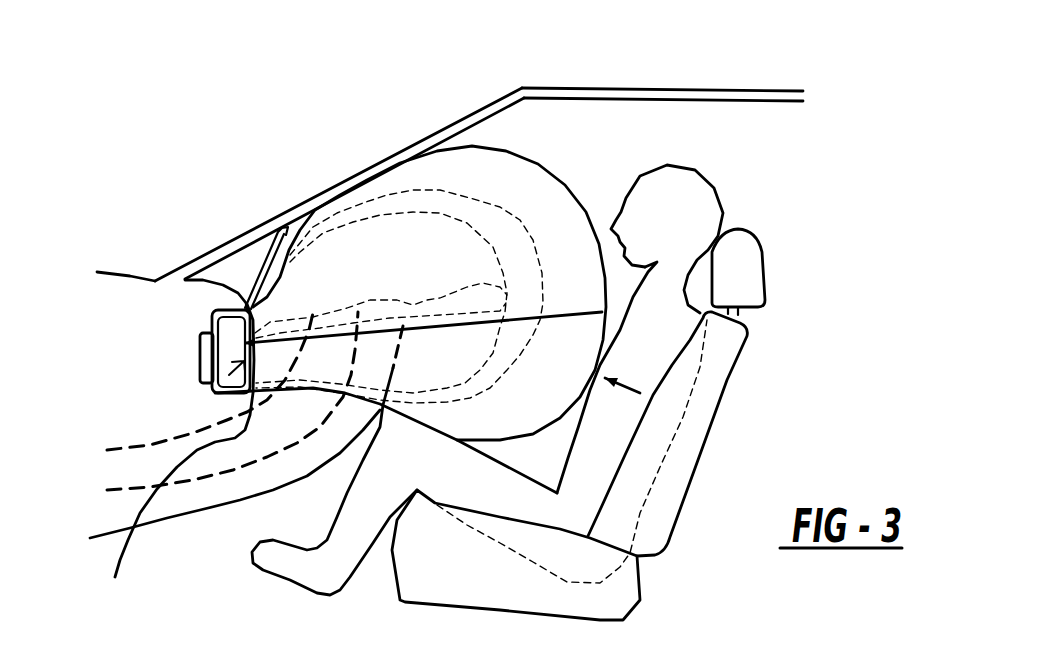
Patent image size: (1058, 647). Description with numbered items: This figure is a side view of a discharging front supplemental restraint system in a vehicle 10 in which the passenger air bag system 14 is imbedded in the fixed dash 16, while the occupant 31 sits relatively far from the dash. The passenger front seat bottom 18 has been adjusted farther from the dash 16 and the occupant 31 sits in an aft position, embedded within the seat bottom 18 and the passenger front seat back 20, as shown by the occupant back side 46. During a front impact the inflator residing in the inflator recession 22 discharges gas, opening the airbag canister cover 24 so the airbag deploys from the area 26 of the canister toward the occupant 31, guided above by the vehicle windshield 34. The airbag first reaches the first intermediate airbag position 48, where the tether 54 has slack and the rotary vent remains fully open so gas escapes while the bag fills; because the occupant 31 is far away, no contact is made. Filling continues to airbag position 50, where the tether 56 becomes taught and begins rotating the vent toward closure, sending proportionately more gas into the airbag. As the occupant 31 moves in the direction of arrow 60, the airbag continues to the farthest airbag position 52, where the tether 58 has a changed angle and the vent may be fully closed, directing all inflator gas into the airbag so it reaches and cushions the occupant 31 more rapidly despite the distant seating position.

The vehicle 10 is at (706, 88).
The passenger air bag system 14 is at (212, 321).
The dash 16 is at (190, 284).
The passenger front seat bottom 18 is at (635, 608).
The passenger front seat back 20 is at (752, 342).
The inflator recession 22 is at (200, 336).
The airbag canister cover 24 is at (265, 257).
The area of the airbag canister 26 is at (214, 390).
The occupant 31 is at (713, 188).
The vehicle windshield 34 is at (492, 99).
The occupant back side 46 is at (683, 407).
The first intermediate airbag position 48 is at (368, 218).
The airbag position 50 is at (408, 195).
The airbag position 52 is at (467, 145).
The tether 54 is at (198, 390).
The tether 56 is at (220, 409).
The tether 58 is at (220, 483).
The direction arrow 60 is at (640, 393).